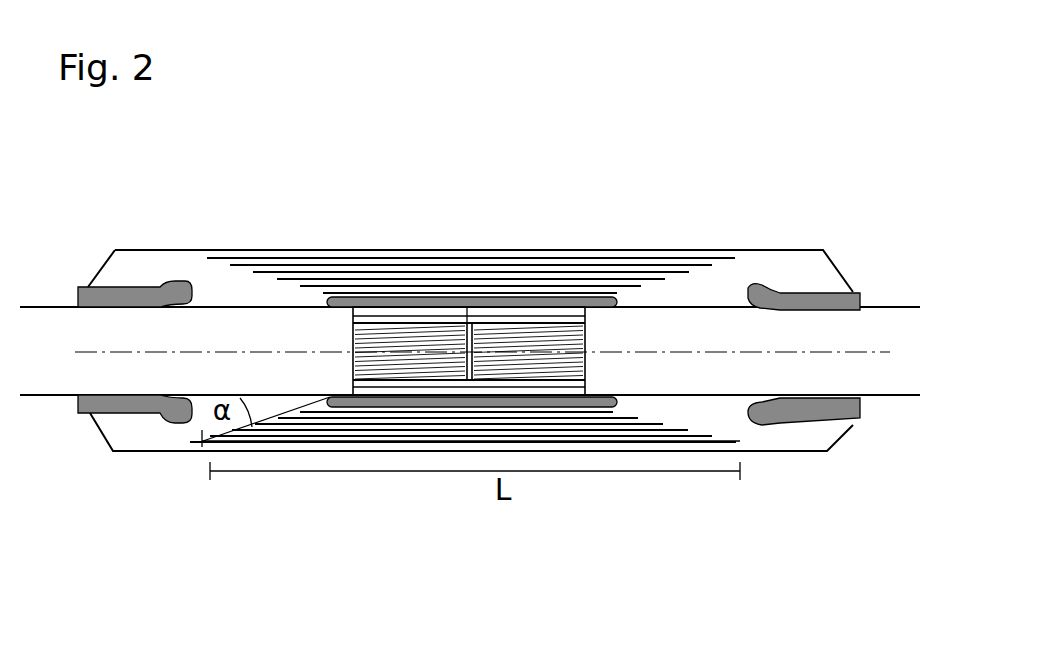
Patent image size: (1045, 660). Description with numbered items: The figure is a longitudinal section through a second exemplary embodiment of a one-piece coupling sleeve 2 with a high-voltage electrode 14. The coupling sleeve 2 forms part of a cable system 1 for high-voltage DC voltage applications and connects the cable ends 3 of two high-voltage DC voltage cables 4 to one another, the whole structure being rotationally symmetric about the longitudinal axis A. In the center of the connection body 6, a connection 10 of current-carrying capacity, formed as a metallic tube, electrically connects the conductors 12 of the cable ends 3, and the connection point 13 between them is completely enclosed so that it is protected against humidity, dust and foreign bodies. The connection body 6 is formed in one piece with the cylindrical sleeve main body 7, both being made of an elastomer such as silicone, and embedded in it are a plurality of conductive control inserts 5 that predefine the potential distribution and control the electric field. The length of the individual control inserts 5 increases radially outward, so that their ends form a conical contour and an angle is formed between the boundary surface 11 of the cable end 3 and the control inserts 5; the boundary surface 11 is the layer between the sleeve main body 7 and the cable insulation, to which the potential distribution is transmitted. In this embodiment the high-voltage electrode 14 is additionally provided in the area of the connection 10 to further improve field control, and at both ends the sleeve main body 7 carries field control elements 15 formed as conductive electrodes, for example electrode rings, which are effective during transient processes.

The cable system 1 is at (834, 152).
The coupling sleeve 2 is at (470, 270).
The cable ends 3 is at (303, 388).
The high-voltage DC voltage cables 4 is at (50, 396).
The control inserts 5 is at (372, 290).
The connection body 6 is at (463, 278).
The sleeve main body 7 is at (166, 258).
The connection of current-carrying capacity 10 is at (467, 300).
The boundary surface 11 is at (703, 318).
The conductors 12 is at (420, 365).
The connection point 13 is at (475, 410).
The high-voltage electrode 14 is at (532, 300).
The field control elements 15 is at (137, 414).
The longitudinal axis A is at (72, 351).